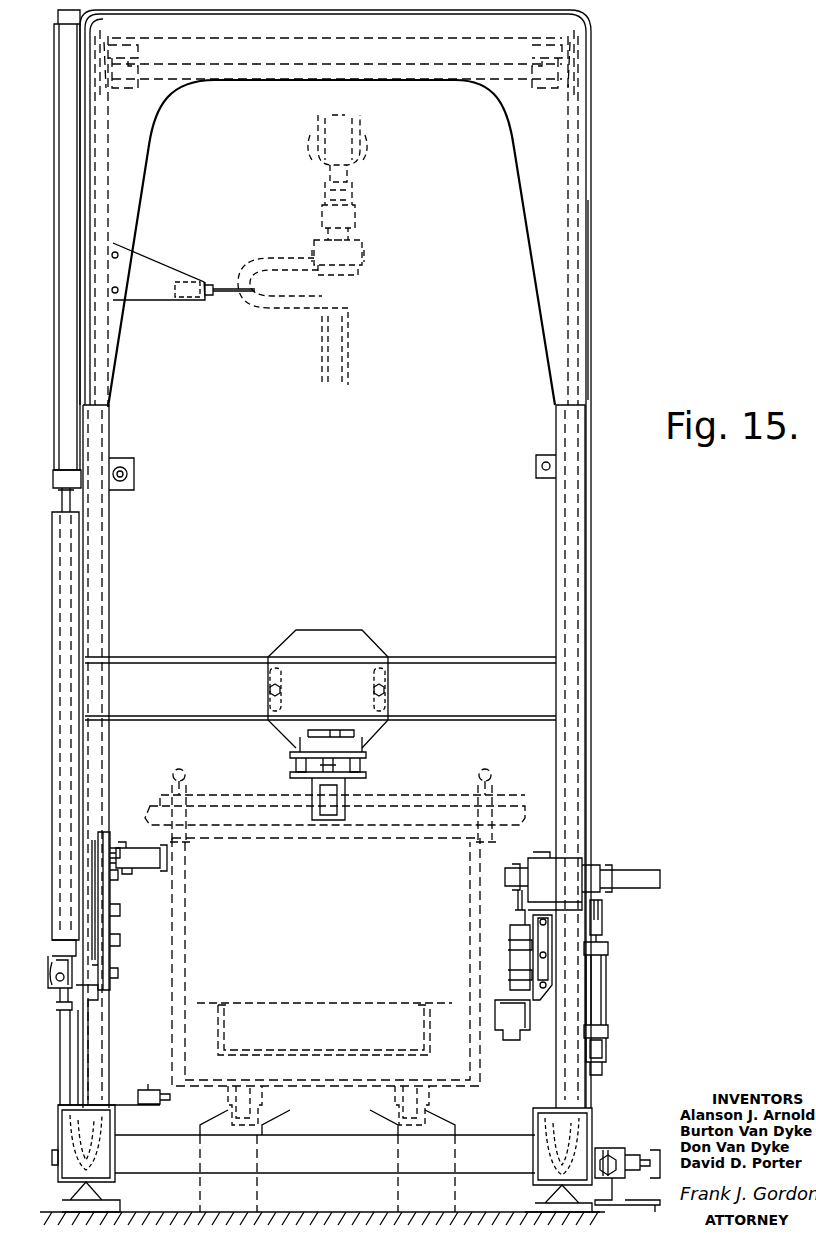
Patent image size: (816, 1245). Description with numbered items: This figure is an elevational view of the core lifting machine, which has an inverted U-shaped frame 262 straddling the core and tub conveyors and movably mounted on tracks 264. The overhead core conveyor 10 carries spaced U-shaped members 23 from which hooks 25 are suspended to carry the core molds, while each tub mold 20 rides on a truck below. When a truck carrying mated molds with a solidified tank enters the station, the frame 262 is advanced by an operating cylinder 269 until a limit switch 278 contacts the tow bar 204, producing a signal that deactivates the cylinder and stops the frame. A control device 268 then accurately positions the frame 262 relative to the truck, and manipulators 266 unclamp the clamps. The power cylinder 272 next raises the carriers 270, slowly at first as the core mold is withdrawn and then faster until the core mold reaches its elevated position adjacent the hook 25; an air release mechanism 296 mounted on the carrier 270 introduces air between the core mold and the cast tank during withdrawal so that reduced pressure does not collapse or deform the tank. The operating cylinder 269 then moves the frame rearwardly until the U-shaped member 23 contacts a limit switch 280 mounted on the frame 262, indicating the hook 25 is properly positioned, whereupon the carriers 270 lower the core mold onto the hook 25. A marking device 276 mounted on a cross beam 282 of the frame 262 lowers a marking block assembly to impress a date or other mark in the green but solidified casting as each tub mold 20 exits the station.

The overhead core conveyor 10 is at (362, 125).
The U-shaped member 23 is at (262, 262).
The hook 25 is at (348, 352).
The limit switch 280 is at (208, 283).
The operating cylinder 272 is at (55, 378).
The inverted U-shaped frame 262 is at (596, 338).
The cross beam 282 is at (434, 660).
The marking device 276 is at (392, 771).
The air release mechanism 296 is at (188, 864).
The carriers 270 is at (134, 893).
The control device 268 is at (494, 982).
The manipulators 266 is at (632, 995).
The tub mold 20 is at (186, 982).
The tow bar 204 is at (158, 1067).
The limit switch 278 is at (140, 1092).
The operating cylinder 269 is at (610, 1146).
The tracks 264 is at (545, 1194).